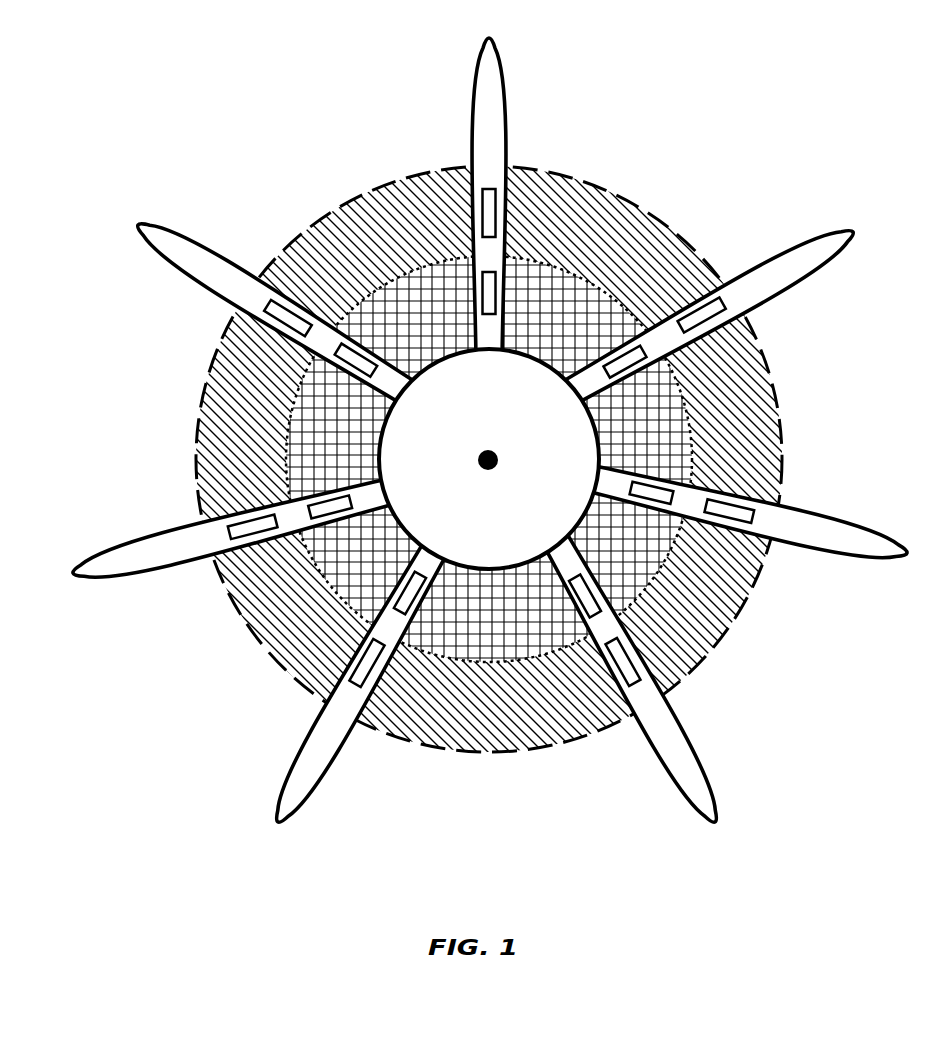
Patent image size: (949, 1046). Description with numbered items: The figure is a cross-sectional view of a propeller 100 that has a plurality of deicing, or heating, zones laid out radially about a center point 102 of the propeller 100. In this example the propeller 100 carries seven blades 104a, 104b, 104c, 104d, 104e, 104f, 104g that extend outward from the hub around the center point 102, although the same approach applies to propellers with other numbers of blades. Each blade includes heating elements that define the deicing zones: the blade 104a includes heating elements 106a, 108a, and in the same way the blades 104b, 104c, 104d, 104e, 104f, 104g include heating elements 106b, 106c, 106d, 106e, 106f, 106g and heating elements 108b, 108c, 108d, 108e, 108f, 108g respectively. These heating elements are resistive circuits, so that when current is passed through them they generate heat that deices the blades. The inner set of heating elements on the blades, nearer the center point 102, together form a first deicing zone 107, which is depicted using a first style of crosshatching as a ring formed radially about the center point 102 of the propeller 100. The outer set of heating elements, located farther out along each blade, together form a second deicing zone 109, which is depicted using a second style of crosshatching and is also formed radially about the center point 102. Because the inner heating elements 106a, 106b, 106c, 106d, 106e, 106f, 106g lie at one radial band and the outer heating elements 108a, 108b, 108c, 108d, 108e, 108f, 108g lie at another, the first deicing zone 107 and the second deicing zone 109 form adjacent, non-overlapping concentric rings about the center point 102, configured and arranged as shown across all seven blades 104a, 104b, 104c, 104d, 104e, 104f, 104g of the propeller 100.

The propeller 100 is at (236, 96).
The center point 102 is at (497, 452).
The blade 104a is at (474, 94).
The blade 104b is at (800, 248).
The blade 104c is at (866, 531).
The blade 104d is at (702, 788).
The blade 104e is at (330, 790).
The blade 104f is at (150, 530).
The blade 104g is at (192, 283).
The heating element 106a is at (480, 314).
The heating element 106b is at (606, 347).
The heating element 106c is at (640, 470).
The heating element 106d is at (618, 582).
The heating element 106e is at (430, 615).
The heating element 106f is at (338, 525).
The heating element 106g is at (357, 380).
The heating element 108a is at (480, 222).
The heating element 108b is at (680, 300).
The heating element 108c is at (737, 500).
The heating element 108d is at (642, 628).
The heating element 108e is at (385, 690).
The heating element 108f is at (265, 550).
The heating element 108g is at (275, 332).
The first deicing zone 107 is at (678, 545).
The second deicing zone 109 is at (740, 598).